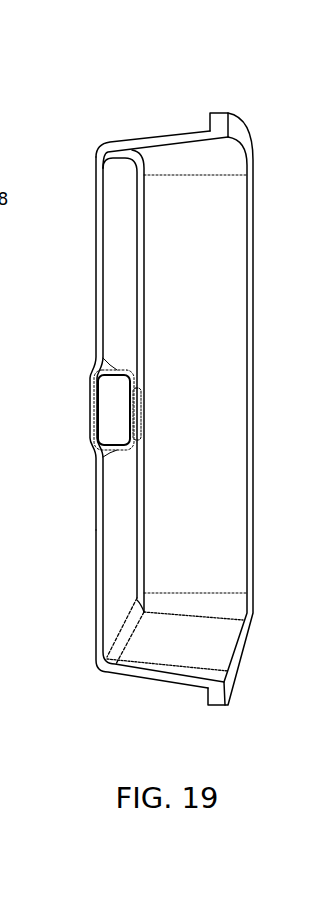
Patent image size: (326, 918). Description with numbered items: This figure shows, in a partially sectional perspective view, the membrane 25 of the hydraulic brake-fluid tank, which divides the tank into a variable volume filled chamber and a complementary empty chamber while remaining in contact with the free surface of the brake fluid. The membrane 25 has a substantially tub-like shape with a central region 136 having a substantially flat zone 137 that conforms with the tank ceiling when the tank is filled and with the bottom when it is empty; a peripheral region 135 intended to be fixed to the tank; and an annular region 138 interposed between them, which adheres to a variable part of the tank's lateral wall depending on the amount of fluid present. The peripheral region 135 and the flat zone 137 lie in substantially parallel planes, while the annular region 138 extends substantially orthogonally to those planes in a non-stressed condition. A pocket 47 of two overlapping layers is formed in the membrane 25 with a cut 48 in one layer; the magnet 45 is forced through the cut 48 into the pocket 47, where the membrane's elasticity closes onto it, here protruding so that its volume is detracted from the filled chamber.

The membrane 25 is at (119, 122).
The peripheral region 135 is at (238, 118).
The central region 136 is at (87, 180).
The substantially flat zone 137 is at (115, 533).
The annular region 138 is at (177, 124).
The magnet 45 is at (110, 408).
The pocket 47 is at (110, 388).
The cut 48 is at (143, 420).